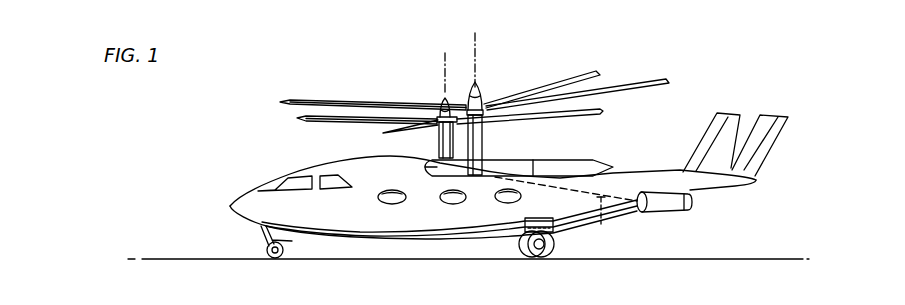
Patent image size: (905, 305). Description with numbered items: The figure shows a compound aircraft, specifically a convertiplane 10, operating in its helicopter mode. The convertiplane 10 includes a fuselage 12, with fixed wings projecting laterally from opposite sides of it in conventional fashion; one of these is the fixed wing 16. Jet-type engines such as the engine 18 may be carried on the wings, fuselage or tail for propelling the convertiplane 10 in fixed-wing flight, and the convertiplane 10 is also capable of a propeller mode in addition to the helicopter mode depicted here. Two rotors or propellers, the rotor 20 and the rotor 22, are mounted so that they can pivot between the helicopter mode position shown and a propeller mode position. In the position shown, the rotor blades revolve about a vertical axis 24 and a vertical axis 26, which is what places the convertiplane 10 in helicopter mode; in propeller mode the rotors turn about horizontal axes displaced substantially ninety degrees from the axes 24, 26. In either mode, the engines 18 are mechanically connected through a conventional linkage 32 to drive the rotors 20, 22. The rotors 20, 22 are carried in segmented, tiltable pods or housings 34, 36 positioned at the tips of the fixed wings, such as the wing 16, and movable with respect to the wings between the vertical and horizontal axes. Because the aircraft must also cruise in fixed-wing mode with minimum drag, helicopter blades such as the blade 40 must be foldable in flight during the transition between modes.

The convertiplane 10 is at (248, 149).
The fuselage 12 is at (352, 158).
The fixed wing 16 is at (426, 163).
The jet-type engine 18 is at (672, 202).
The rotor 20 is at (474, 85).
The rotor 22 is at (440, 98).
The vertical axis 24 is at (480, 43).
The vertical axis 26 is at (443, 77).
The linkage 32 is at (601, 221).
The tiltable pod 34 is at (481, 138).
The tiltable pod 36 is at (440, 138).
The helicopter blade 40 is at (312, 100).